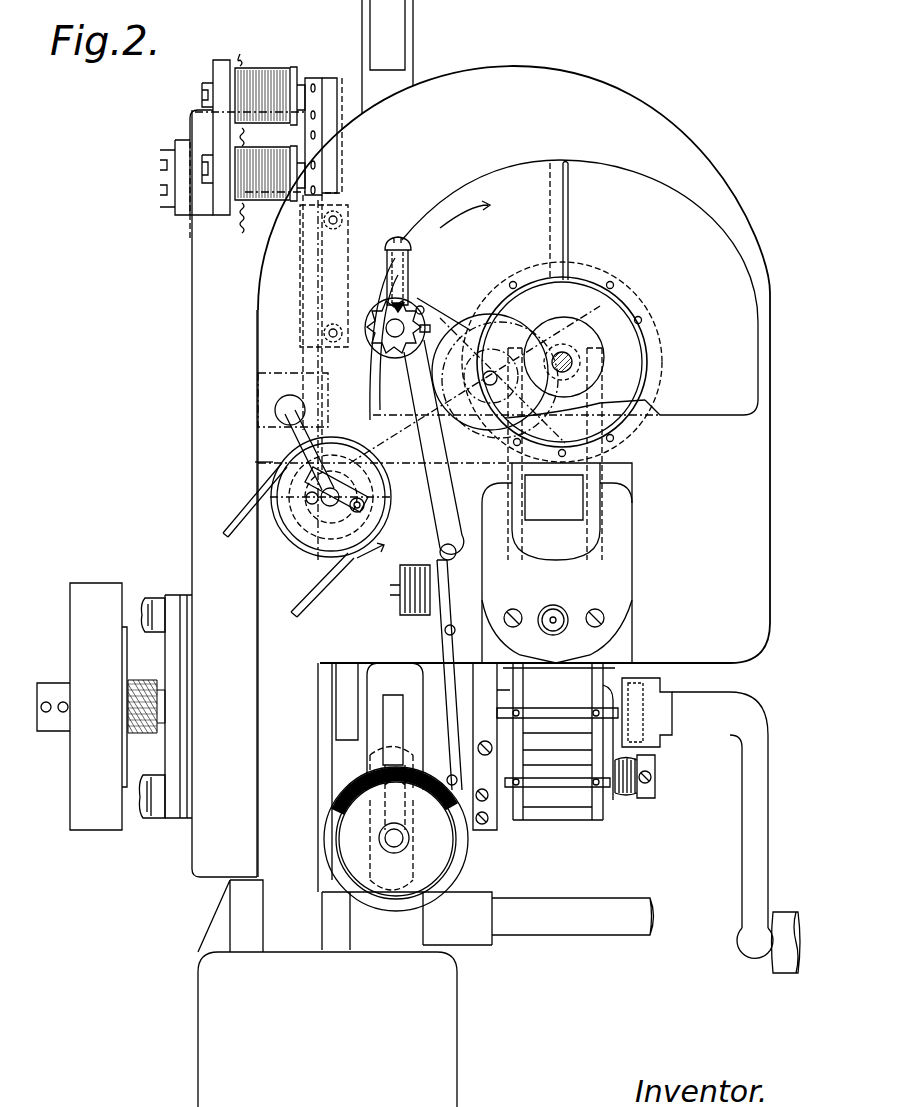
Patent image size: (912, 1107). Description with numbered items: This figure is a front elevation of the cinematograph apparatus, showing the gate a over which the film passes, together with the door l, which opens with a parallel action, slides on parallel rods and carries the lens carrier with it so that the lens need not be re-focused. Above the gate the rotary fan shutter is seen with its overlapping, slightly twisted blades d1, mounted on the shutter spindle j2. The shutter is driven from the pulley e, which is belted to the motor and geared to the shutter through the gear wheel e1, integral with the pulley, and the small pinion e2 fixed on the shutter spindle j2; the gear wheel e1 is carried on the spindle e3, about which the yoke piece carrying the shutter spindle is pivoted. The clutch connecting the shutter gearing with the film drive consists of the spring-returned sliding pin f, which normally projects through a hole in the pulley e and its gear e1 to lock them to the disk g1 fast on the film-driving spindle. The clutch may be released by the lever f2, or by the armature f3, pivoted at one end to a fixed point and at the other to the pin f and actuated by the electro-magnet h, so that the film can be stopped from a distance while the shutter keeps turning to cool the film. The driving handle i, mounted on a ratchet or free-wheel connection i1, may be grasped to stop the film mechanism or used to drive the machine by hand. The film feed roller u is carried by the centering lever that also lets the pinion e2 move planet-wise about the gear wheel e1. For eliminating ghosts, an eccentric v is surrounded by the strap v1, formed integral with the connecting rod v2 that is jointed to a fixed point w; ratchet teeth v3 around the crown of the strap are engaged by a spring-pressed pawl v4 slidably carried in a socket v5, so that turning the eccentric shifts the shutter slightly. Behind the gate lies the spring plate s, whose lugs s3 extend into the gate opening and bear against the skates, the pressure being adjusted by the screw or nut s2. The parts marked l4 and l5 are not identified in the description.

The gate a is at (403, 553).
The electro-magnet h is at (262, 70).
The lever f2 is at (312, 78).
The armature f3 is at (332, 80).
The shutter blades d1 is at (591, 177).
The pinion e2 is at (570, 355).
The gear wheel e1 is at (447, 338).
The spindle e3 is at (493, 371).
The shutter spindle j2 is at (572, 372).
The eccentric v is at (403, 336).
The connecting rod v2 is at (438, 492).
The strap v1 is at (380, 350).
The ratchet teeth v3 is at (390, 320).
The lever arm l5 is at (385, 327).
The socket v5 is at (395, 272).
The pawl v4 is at (395, 305).
The lever l4 is at (432, 302).
The pulley e is at (300, 548).
The disk g1 is at (275, 470).
The clutch pin f is at (365, 510).
The fixed point w is at (440, 552).
The spring plate s is at (590, 560).
The lugs s3 is at (590, 505).
The screw or nut s2 is at (568, 625).
The film feed roller u is at (556, 768).
The ratchet i1 is at (645, 745).
The driving handle i is at (752, 878).
The door l is at (325, 838).